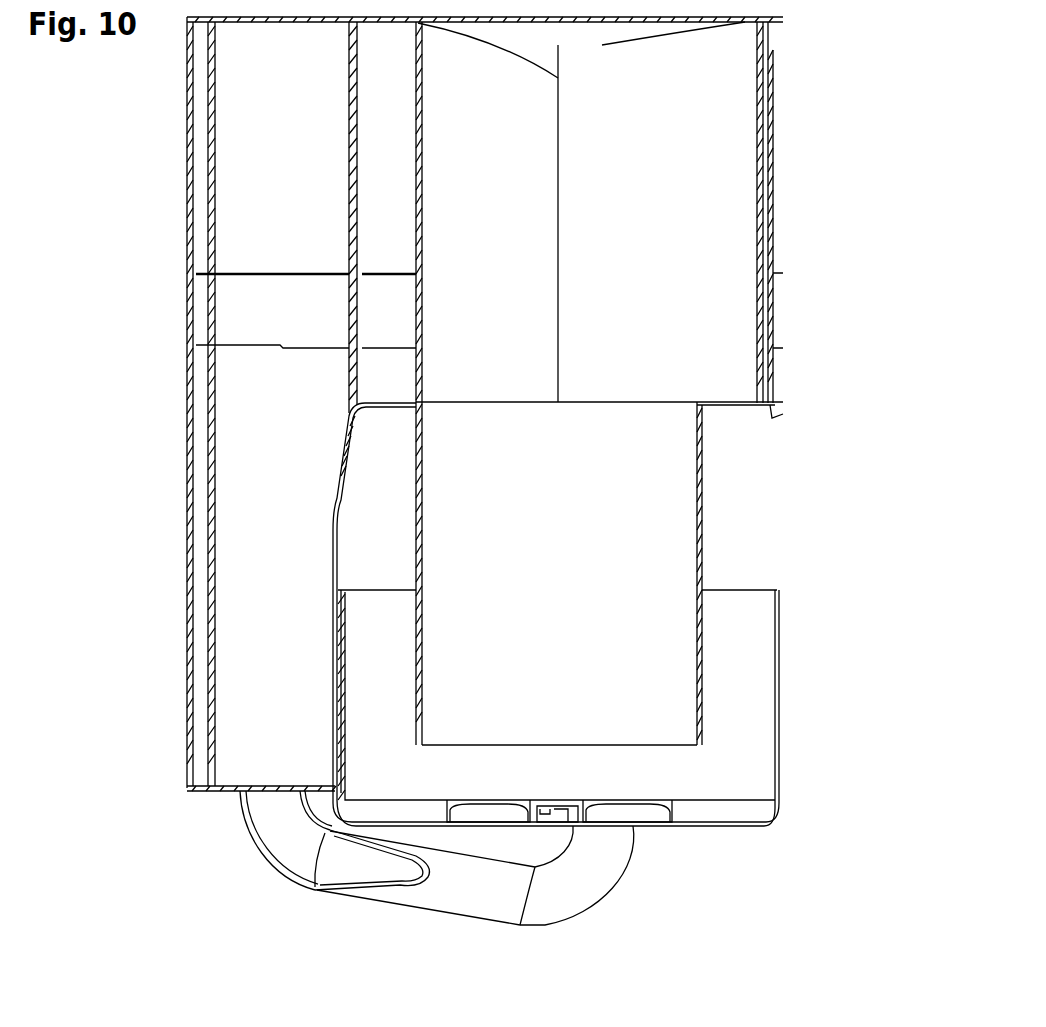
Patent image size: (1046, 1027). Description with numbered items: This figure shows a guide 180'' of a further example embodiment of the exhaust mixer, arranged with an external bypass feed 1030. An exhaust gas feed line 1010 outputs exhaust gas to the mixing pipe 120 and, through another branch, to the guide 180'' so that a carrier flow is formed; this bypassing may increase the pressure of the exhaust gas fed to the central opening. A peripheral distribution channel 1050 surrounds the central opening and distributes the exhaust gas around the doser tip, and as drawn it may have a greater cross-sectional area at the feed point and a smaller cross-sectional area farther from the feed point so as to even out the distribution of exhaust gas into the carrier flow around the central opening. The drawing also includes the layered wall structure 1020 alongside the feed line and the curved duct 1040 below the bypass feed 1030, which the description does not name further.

The exhaust gas feed line 1010 is at (238, 519).
The insulation layer 1020 is at (349, 200).
The external bypass feed 1030 is at (244, 792).
The duct 1040 is at (240, 825).
The peripheral distribution channel 1050 is at (491, 808).
The guide 180'' is at (471, 791).
The mixing pipe 120 is at (702, 467).